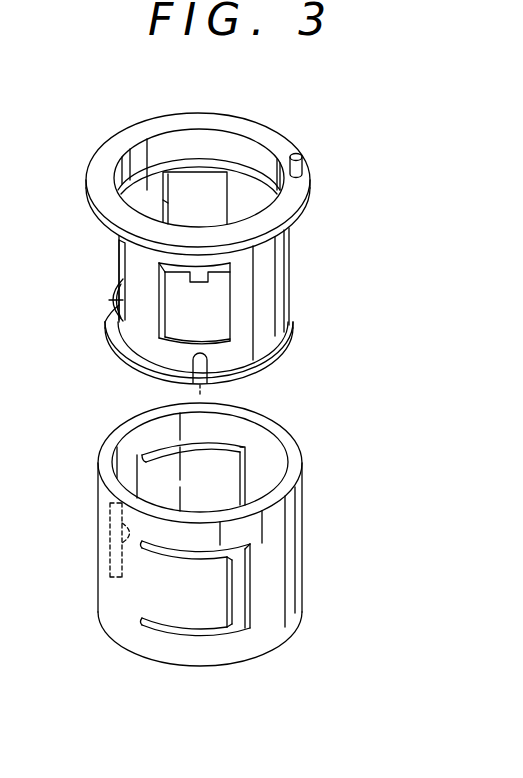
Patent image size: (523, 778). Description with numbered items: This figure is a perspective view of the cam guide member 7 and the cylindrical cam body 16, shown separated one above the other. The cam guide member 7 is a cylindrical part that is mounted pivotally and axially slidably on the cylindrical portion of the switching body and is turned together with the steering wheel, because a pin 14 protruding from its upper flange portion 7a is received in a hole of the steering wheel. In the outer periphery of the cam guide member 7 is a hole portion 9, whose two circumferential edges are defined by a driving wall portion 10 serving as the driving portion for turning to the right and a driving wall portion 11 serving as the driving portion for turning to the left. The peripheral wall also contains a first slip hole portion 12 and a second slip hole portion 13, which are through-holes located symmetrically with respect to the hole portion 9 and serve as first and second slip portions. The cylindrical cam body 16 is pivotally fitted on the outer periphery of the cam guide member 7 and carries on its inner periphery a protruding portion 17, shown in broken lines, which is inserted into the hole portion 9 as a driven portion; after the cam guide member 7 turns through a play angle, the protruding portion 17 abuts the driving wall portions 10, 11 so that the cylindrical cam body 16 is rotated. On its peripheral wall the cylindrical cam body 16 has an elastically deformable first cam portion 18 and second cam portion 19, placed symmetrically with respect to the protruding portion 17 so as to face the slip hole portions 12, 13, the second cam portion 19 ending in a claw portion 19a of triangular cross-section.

The cam guide member 7 is at (290, 268).
The upper flange portion 7a is at (270, 140).
The hole portion 9 is at (118, 282).
The driving wall portion 10 is at (112, 298).
The driving wall portion 11 is at (118, 255).
The first slip hole portion 12 is at (168, 203).
The second slip hole portion 13 is at (220, 308).
The pin 14 is at (298, 153).
The cylindrical cam body 16 is at (303, 552).
The protruding portion 17 is at (110, 555).
The first cam portion 18 is at (220, 460).
The second cam portion 19 is at (217, 606).
The claw portion 19a is at (238, 612).